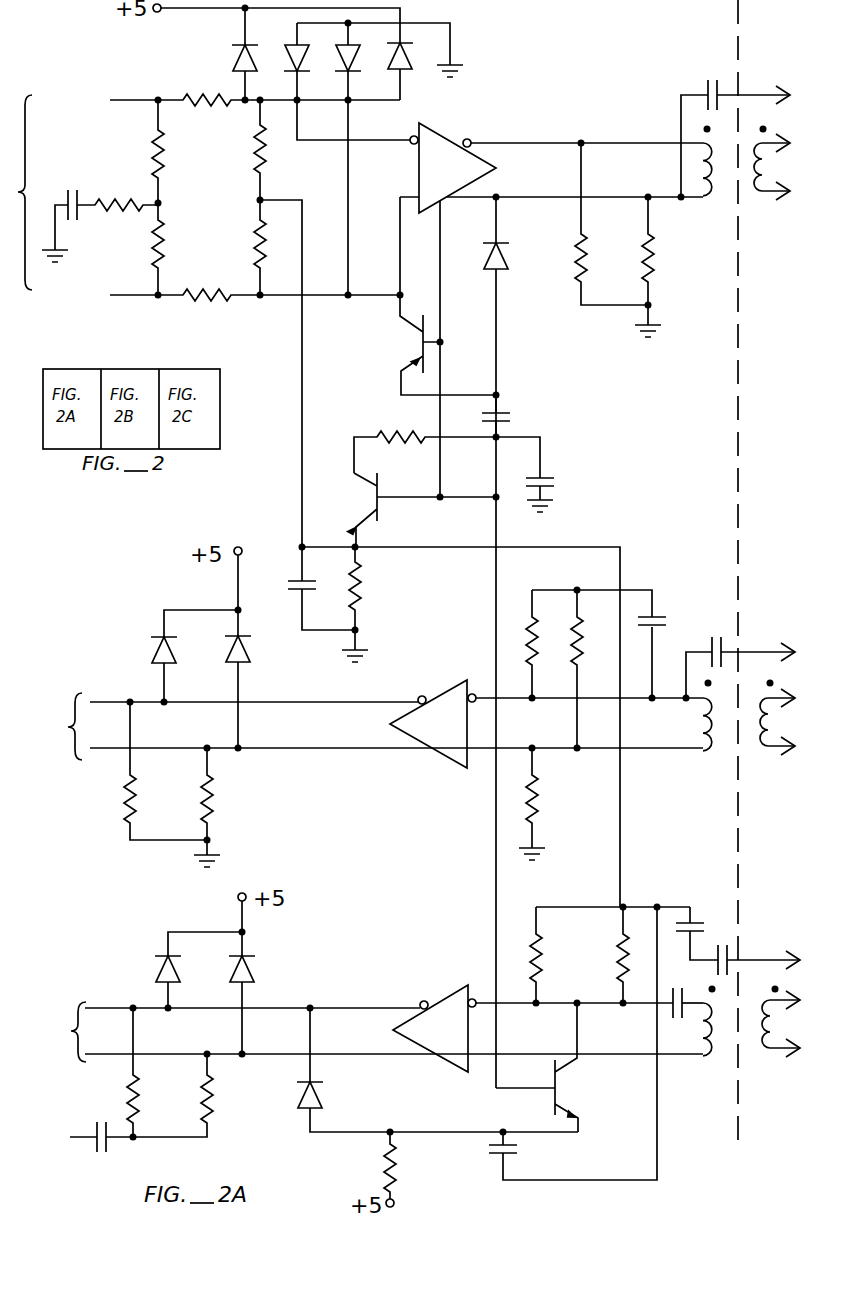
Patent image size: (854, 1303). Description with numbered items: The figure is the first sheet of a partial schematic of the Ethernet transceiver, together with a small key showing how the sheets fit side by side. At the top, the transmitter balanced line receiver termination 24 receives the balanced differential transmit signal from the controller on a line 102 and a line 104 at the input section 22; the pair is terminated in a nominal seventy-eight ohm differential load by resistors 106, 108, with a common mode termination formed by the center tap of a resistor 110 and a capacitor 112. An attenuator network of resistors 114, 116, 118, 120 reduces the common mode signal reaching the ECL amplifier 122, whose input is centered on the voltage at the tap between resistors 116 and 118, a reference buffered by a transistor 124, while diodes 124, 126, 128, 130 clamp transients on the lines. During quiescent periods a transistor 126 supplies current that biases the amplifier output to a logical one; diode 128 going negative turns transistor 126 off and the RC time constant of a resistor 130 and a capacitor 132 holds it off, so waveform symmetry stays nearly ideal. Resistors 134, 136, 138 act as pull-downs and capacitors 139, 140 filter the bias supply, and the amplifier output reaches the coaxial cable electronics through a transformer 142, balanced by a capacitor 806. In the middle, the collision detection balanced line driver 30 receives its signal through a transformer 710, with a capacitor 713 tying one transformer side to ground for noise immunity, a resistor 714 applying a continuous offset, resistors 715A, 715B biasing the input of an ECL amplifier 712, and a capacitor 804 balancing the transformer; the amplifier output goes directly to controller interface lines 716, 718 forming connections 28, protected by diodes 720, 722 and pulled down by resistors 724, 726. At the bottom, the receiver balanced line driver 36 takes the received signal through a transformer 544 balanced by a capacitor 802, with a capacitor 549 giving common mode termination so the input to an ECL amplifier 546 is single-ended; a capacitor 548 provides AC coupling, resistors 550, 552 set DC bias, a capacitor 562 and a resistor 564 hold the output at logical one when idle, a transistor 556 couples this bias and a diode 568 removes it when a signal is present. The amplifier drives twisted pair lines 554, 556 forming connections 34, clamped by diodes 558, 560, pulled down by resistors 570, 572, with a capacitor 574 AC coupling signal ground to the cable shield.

The input terminal section 22 is at (32, 202).
The transmitter balanced line receiver termination 24 is at (278, 480).
The pair of connections 28 is at (56, 729).
The collision detection balanced line driver 30 is at (382, 812).
The pair of connections 34 is at (56, 1032).
The receiver balanced line driver 36 is at (115, 966).
The line 102 is at (133, 88).
The line 104 is at (128, 298).
The resistor 106 is at (166, 140).
The resistor 108 is at (164, 268).
The resistor 110 is at (118, 200).
The capacitor 112 is at (66, 197).
The resistor 114 is at (212, 98).
The resistor 116 is at (268, 152).
The resistor 118 is at (254, 240).
The resistor 120 is at (196, 298).
The ECL amplifier 122 is at (442, 138).
The diode / buffer transistor 124 is at (240, 66).
The diode / transistor 126 is at (297, 42).
The diode 128 is at (344, 74).
The diode / resistor 130 is at (402, 78).
The capacitor 132 is at (502, 412).
The resistor 134 is at (364, 576).
The resistor 136 is at (576, 265).
The resistor 138 is at (656, 264).
The capacitor 139 is at (292, 582).
The capacitor 140 is at (548, 480).
The transformer 142 is at (722, 202).
The capacitor 806 is at (704, 84).
The transformer 710 is at (726, 745).
The ECL amplifier 712 is at (430, 690).
The capacitor 713 is at (662, 616).
The resistor 714 is at (538, 798).
The resistor 715A is at (528, 622).
The resistor 715B is at (580, 620).
The controller interface line 716 is at (104, 701).
The controller interface line 718 is at (106, 751).
The diode 720 is at (150, 648).
The diode 722 is at (226, 658).
The resistor 724 is at (124, 800).
The resistor 726 is at (216, 796).
The capacitor 804 is at (708, 640).
The transformer 544 is at (724, 1046).
The ECL amplifier 546 is at (428, 1000).
The capacitor 548 is at (688, 998).
The capacitor 549 is at (698, 920).
The resistor 550 is at (612, 956).
The resistor 552 is at (546, 960).
The line 554 is at (104, 1006).
The line 556 is at (112, 1057).
The diode 558 is at (254, 980).
The diode 560 is at (180, 980).
The capacitor 562 is at (512, 1156).
The resistor 564 is at (382, 1174).
The diode 568 is at (296, 1100).
The resistor 570 is at (140, 1088).
The resistor 572 is at (214, 1104).
The capacitor 574 is at (110, 1148).
The capacitor 802 is at (734, 956).